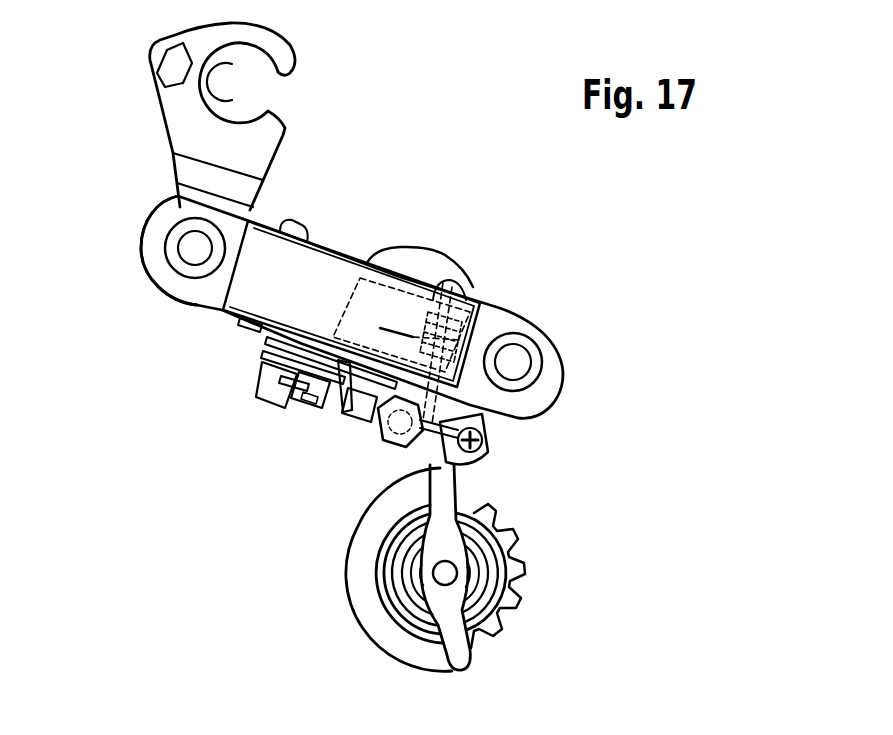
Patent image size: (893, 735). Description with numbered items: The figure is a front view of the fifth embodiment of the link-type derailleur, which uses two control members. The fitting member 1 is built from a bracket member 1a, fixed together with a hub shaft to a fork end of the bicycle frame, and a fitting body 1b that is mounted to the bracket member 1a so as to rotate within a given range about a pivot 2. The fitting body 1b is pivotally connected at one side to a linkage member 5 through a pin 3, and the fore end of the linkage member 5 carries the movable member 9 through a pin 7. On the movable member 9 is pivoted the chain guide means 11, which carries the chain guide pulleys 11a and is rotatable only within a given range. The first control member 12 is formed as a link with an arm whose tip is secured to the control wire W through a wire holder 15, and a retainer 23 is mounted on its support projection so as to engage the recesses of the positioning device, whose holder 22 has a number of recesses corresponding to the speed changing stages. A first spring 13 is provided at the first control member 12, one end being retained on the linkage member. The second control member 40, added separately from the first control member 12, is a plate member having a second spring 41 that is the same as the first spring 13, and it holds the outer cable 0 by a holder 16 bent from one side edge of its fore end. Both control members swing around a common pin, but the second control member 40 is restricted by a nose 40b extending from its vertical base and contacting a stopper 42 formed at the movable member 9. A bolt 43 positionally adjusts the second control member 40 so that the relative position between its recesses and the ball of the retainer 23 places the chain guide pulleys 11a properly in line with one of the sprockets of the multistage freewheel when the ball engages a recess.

The fitting member 1 is at (148, 192).
The bracket member 1a is at (178, 125).
The fitting body 1b is at (157, 260).
The pivot 2 is at (188, 247).
The pin 3 is at (247, 330).
The linkage member 5 is at (240, 305).
The pin 7 is at (460, 285).
The movable member 9 is at (555, 338).
The chain guide means 11 is at (487, 417).
The chain guide pulley 11a is at (510, 568).
The first control member 12 is at (297, 392).
The first spring 13 is at (470, 335).
The wire holder 15 is at (383, 447).
The cable holder 16 is at (353, 417).
The holder 22 is at (283, 362).
The retainer 23 is at (265, 402).
The second control member 40 is at (315, 365).
The nose 40b is at (480, 487).
The second spring 41 is at (390, 477).
The stopper 42 is at (487, 450).
The bolt 43 is at (483, 455).
The control wire W is at (307, 410).
The outer cable 0 is at (330, 440).